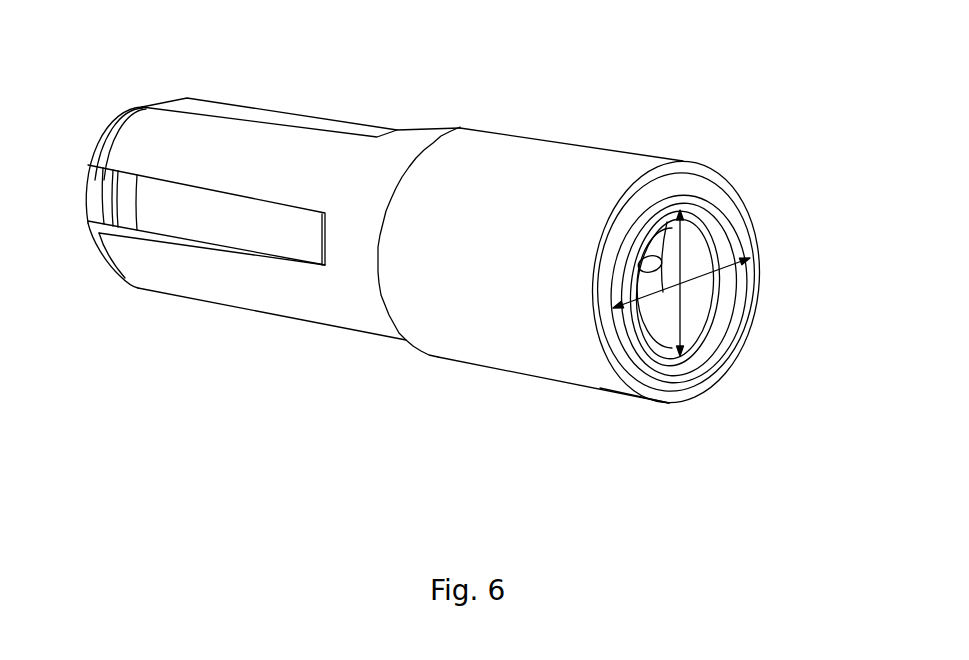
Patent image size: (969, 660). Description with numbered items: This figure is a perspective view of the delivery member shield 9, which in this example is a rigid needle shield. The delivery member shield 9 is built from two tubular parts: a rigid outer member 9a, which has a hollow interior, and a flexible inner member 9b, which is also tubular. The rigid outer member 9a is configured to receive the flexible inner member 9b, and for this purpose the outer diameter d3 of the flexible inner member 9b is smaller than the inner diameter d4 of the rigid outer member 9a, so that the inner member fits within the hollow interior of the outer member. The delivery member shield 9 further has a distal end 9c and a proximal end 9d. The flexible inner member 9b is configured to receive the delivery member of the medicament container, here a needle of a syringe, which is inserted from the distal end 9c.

The delivery member shield 9 is at (535, 67).
The rigid outer member 9a is at (679, 172).
The flexible inner member 9b is at (708, 228).
The distal end 9c is at (647, 398).
The proximal end 9d is at (111, 133).
The outer diameter of the flexible inner member d3 is at (677, 318).
The inner diameter of the rigid outer member d4 is at (687, 281).